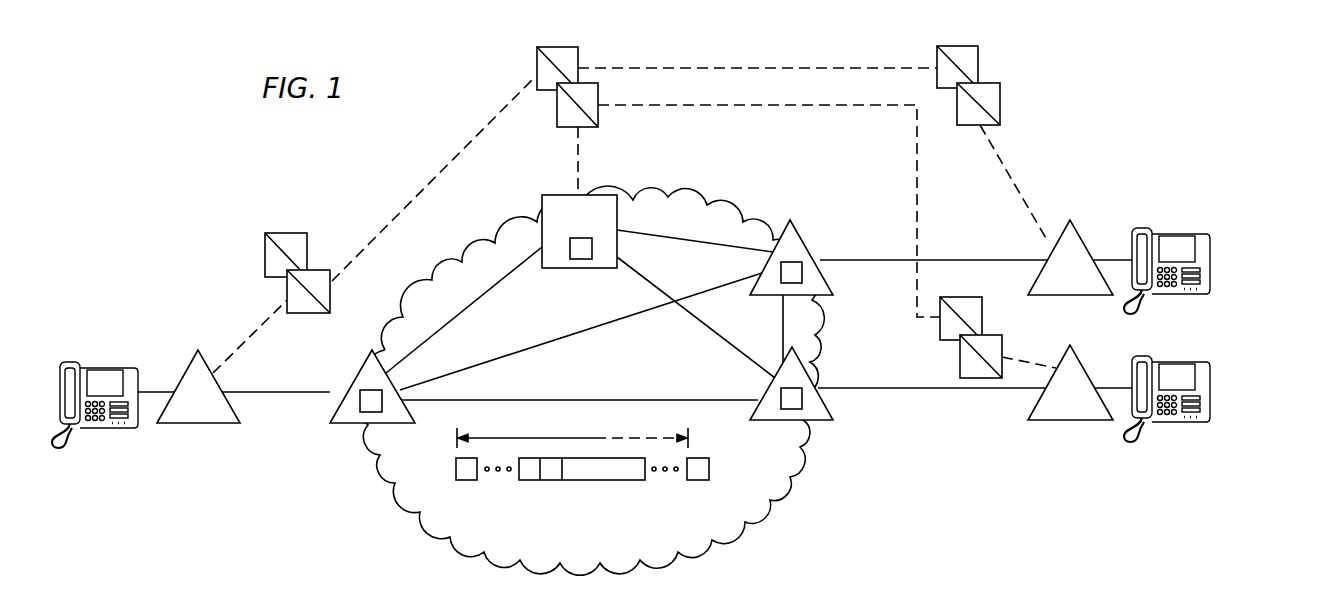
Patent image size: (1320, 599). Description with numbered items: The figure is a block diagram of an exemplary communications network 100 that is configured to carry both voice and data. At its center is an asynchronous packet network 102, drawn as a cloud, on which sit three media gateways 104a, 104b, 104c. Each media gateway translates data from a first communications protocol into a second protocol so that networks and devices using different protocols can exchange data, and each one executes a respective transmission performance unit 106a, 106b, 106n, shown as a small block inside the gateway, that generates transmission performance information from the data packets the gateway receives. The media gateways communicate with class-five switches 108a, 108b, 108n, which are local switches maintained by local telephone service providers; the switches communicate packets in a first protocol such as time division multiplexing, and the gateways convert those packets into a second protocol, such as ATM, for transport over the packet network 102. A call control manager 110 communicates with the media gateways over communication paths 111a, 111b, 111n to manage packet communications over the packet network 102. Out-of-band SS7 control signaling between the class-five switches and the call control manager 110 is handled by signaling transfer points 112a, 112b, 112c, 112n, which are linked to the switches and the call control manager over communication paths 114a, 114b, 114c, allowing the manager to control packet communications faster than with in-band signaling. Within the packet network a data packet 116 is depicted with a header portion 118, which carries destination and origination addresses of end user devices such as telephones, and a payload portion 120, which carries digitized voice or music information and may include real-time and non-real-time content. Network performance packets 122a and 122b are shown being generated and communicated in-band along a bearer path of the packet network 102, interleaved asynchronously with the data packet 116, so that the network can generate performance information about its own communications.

The communications network 100 is at (352, 170).
The asynchronous packet network 102 is at (478, 246).
The media gateway 104a is at (358, 422).
The media gateway 104b is at (825, 242).
The media gateway 104c is at (827, 424).
The transmission performance unit 106a is at (358, 390).
The transmission performance unit 106b is at (802, 276).
The transmission performance unit 106n is at (802, 403).
The class 5 switch 108a is at (195, 427).
The class 5 switch 108b is at (1083, 297).
The class 5 switch 108n is at (1083, 422).
The call control manager 110 is at (555, 195).
The communication path 111a is at (543, 340).
The communication path 111b is at (602, 398).
The communication path 111n is at (780, 332).
The signaling transfer point 112a is at (265, 253).
The signaling transfer point 112b is at (535, 58).
The signaling transfer point 112c is at (978, 60).
The signaling transfer point 112n is at (940, 328).
The communication path 114a is at (257, 327).
The communication path 114b is at (450, 152).
The communication path 114c is at (583, 152).
The data packet 116 is at (580, 500).
The header portion 118 is at (515, 488).
The payload portion 120 is at (623, 465).
The network performance packet 122a is at (468, 486).
The network performance packet 122b is at (695, 485).